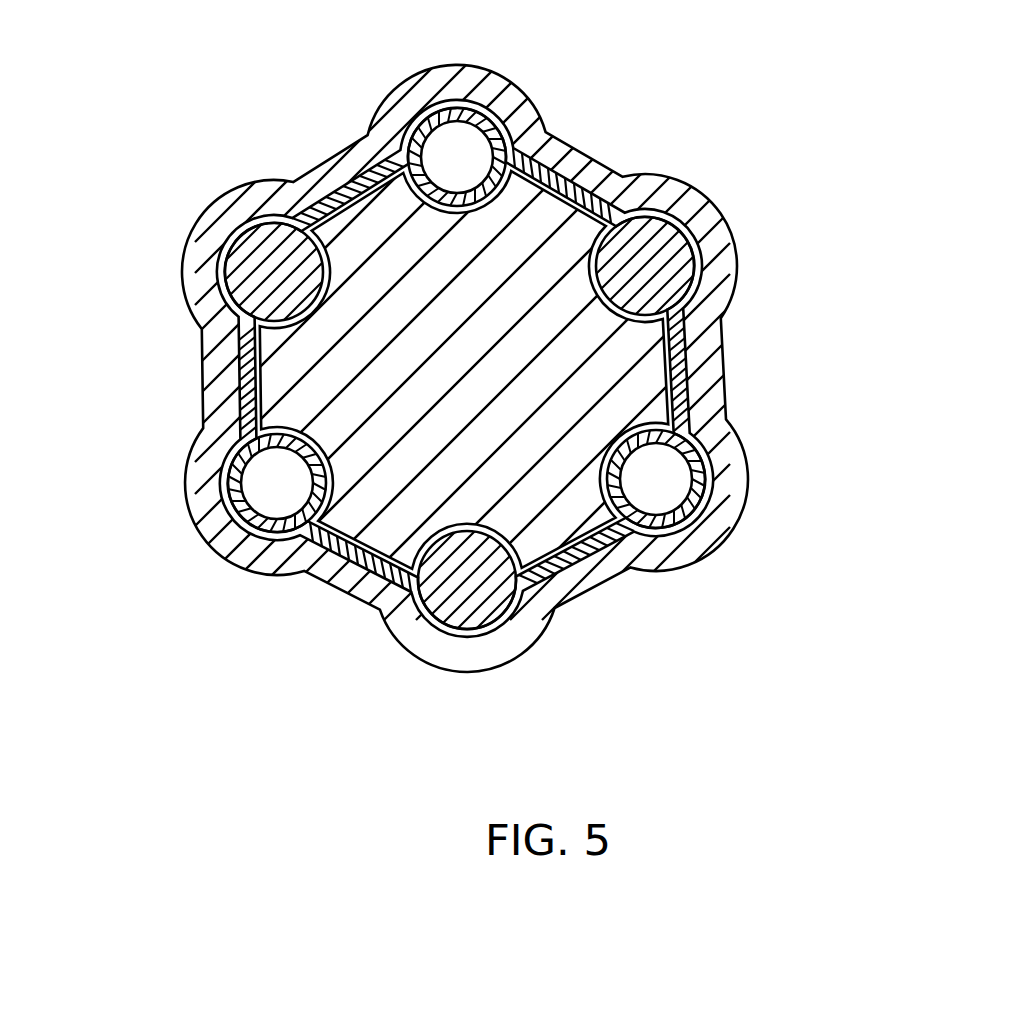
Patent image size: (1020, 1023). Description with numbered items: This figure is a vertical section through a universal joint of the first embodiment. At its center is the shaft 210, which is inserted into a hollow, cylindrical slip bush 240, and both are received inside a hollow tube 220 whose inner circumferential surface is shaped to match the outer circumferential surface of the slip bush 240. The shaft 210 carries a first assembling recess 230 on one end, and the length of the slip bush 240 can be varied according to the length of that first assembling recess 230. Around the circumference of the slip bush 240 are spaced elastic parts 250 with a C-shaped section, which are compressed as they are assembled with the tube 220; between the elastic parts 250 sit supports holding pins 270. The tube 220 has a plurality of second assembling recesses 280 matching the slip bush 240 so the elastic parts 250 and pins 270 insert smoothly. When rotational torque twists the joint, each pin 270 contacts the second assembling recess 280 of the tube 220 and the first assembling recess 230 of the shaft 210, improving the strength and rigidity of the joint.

The shaft 210 is at (343, 408).
The tube 220 is at (578, 152).
The first assembling recess 230 is at (305, 175).
The slip bush 240 is at (243, 352).
The elastic part 250 is at (727, 450).
The pin 270 is at (703, 266).
The second assembling recess 280 is at (541, 620).